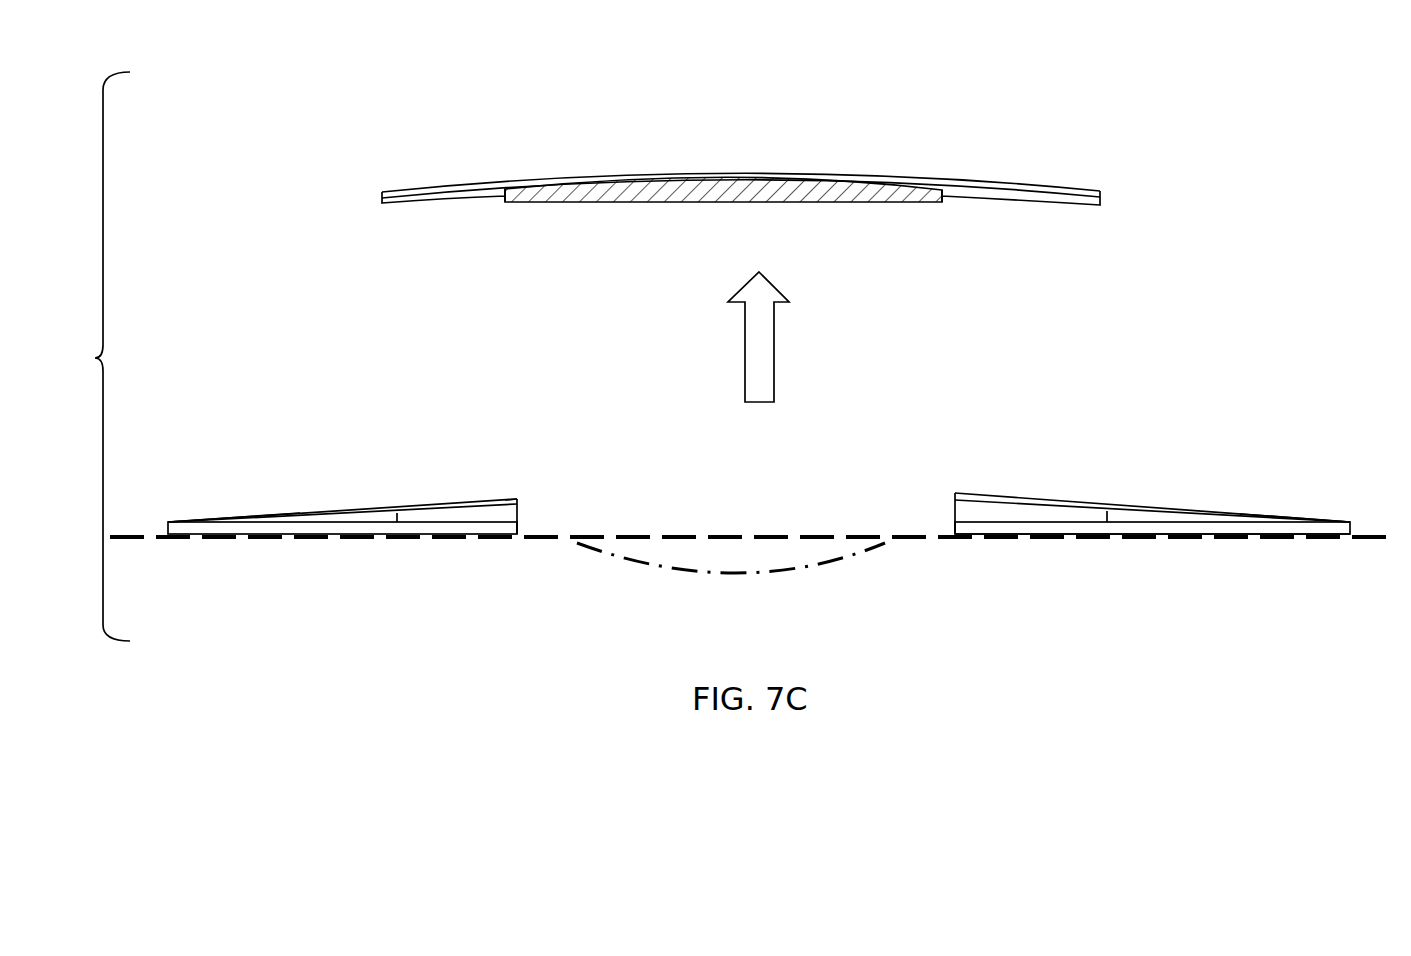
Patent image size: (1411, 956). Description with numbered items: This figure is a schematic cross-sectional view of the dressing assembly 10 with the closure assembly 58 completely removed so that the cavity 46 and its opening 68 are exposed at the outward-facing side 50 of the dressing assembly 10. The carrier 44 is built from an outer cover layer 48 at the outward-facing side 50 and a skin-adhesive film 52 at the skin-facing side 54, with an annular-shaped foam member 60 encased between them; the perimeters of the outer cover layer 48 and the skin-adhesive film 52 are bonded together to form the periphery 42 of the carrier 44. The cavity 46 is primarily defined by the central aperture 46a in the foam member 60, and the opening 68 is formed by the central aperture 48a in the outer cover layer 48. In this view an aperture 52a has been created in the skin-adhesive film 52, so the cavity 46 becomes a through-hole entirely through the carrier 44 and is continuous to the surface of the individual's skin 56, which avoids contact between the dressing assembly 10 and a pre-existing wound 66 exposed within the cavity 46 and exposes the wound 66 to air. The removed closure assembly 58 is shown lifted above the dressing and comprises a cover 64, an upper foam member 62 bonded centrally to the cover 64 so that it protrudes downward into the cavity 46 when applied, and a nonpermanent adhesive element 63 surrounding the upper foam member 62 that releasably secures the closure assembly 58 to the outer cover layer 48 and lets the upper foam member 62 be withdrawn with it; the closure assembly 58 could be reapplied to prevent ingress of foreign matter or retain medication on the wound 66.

The dressing assembly 10 is at (95, 358).
The periphery 42 is at (1352, 527).
The carrier 44 is at (326, 536).
The cavity 46 is at (657, 505).
The central aperture 46a is at (519, 512).
The outer cover layer 48 is at (347, 503).
The central aperture 48a is at (526, 497).
The outward-facing surface or side 50 is at (283, 510).
The skin-adhesive film 52 is at (1033, 534).
The aperture 52a is at (520, 536).
The skin-facing surface or side 54 is at (1140, 534).
The skin 56 is at (905, 536).
The closure assembly 58 is at (757, 119).
The annular-shaped foam member 60 is at (452, 513).
The upper foam member 62 is at (712, 185).
The nonpermanent adhesive element 63 is at (445, 197).
The cover 64 is at (745, 175).
The pre-existing wound 66 is at (633, 553).
The opening 68 is at (955, 499).